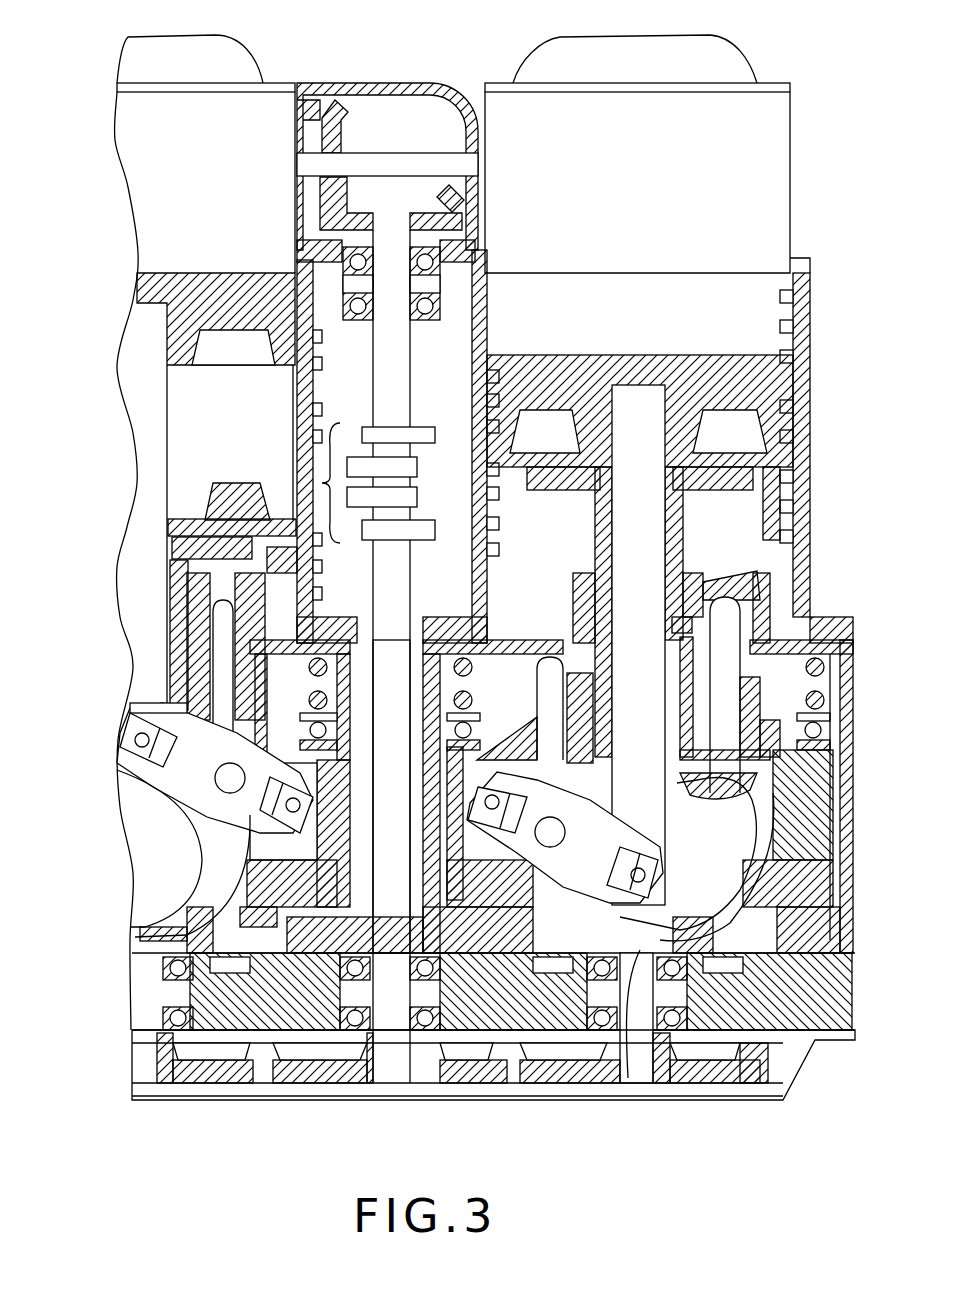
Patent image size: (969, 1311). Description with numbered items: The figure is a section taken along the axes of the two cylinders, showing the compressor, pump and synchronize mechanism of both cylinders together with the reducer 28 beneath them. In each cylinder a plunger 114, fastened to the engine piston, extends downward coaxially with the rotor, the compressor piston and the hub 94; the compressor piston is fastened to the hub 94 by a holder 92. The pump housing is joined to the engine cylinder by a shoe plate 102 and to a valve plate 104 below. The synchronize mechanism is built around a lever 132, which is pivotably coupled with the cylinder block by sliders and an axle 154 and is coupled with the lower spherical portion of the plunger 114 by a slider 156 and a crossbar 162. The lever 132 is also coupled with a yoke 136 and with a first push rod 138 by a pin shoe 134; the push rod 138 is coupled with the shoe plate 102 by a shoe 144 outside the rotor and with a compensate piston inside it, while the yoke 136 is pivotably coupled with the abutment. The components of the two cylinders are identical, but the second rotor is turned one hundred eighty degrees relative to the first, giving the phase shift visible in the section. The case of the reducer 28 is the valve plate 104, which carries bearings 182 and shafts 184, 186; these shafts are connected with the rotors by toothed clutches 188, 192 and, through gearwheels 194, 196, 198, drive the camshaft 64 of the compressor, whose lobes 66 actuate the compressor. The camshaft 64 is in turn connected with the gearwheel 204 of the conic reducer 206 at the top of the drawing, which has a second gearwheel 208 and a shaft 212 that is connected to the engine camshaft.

The conic reducer 206 is at (383, 83).
The second gearwheel 208 is at (344, 137).
The shaft 212 is at (303, 164).
The gearwheel 204 is at (466, 215).
The plunger 114 is at (137, 390).
The lobes 66 is at (300, 433).
The camshaft 64 is at (386, 570).
The shoe plate 102 is at (388, 650).
The holder 92 is at (222, 545).
The hub 94 is at (165, 560).
The shoe 144 is at (175, 598).
The first push rod 138 is at (225, 650).
The slider 156 is at (135, 728).
The crossbar 162 is at (135, 740).
The pin shoe 134 is at (222, 772).
The lever 132 is at (165, 785).
The axle 154 is at (245, 830).
The yoke 136 is at (135, 920).
The toothed clutch 188 is at (180, 950).
The bearings 182 is at (172, 1020).
The shaft 184 is at (142, 1052).
The gearwheel 194 is at (192, 1083).
The gearwheel 196 is at (300, 1083).
The reducer 28 is at (428, 1100).
The gearwheel 198 is at (548, 1083).
The toothed clutch 192 is at (637, 1083).
The shaft 186 is at (640, 1095).
The valve plate 104 is at (847, 1030).